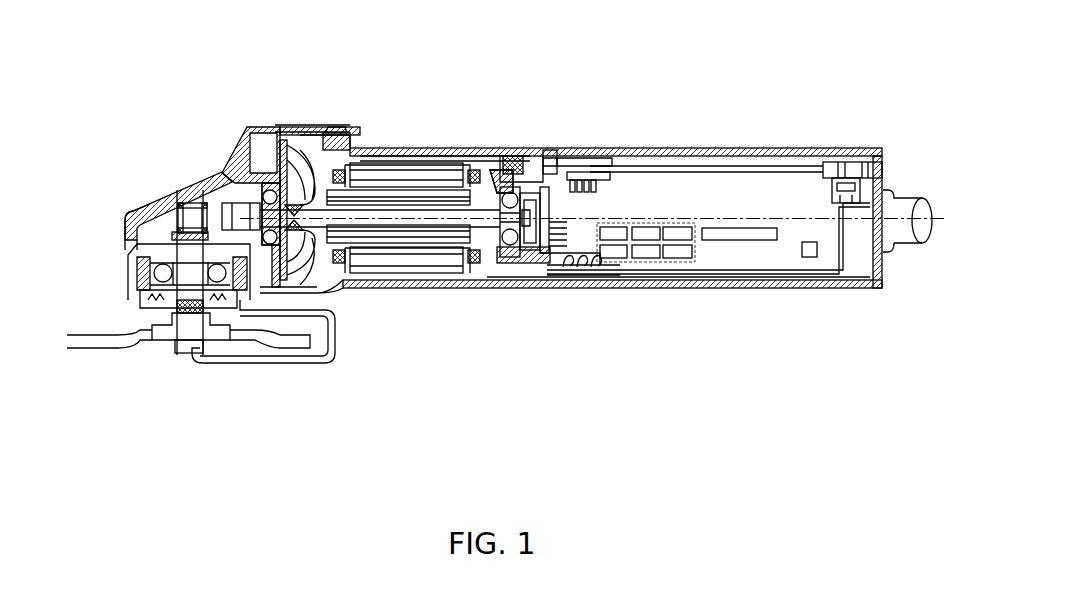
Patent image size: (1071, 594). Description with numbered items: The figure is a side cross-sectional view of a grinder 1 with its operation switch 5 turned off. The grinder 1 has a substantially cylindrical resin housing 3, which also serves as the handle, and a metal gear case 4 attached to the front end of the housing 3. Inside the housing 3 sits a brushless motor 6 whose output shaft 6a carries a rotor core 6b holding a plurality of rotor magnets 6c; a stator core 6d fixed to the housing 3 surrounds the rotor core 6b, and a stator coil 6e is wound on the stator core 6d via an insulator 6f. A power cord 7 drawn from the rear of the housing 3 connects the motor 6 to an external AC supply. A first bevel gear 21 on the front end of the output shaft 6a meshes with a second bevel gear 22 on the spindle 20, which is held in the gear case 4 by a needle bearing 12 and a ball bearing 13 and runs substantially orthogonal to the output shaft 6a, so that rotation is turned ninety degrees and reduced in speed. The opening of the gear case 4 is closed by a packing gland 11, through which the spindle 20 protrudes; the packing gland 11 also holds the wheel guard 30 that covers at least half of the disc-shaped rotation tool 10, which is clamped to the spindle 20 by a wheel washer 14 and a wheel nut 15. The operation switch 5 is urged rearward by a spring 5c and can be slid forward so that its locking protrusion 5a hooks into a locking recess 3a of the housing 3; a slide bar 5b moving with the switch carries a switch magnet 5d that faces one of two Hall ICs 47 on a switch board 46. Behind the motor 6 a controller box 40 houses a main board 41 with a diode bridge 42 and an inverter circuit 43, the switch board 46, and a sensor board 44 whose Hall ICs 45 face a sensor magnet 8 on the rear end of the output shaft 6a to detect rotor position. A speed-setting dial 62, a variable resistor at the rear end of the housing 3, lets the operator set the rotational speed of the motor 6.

The grinder 1 is at (756, 147).
The housing 3 is at (690, 148).
The locking recess 3a is at (312, 126).
The gear case 4 is at (167, 210).
The operation switch 5 is at (357, 128).
The locking protrusion 5a is at (333, 127).
The slide bar 5b is at (410, 150).
The spring 5c is at (527, 150).
The switch magnet 5d is at (600, 153).
The motor 6 is at (430, 268).
The output shaft 6a is at (358, 272).
The rotor core 6b is at (380, 258).
The rotor magnets 6c is at (410, 243).
The stator core 6d is at (470, 266).
The stator coil 6e is at (522, 252).
The insulator 6f is at (482, 272).
The power cord 7 is at (907, 198).
The sensor magnet 8 is at (550, 150).
The rotation tool 10 is at (90, 347).
The packing gland 11 is at (122, 263).
The needle bearing 12 is at (177, 205).
The ball bearing 13 is at (140, 290).
The wheel washer 14 is at (153, 313).
The wheel nut 15 is at (167, 338).
The spindle 20 is at (190, 360).
The first bevel gear 21 is at (244, 127).
The second bevel gear 22 is at (138, 212).
The wheel guard 30 is at (250, 360).
The controller box 40 is at (667, 166).
The main board 41 is at (688, 275).
The diode bridge 42 is at (722, 240).
The inverter circuit 43 is at (643, 262).
The sensor board 44 is at (575, 264).
The Hall ICs 45 is at (553, 268).
The switch board 46 is at (620, 172).
The Hall ICs 47 is at (587, 150).
The speed-setting dial 62 is at (885, 162).